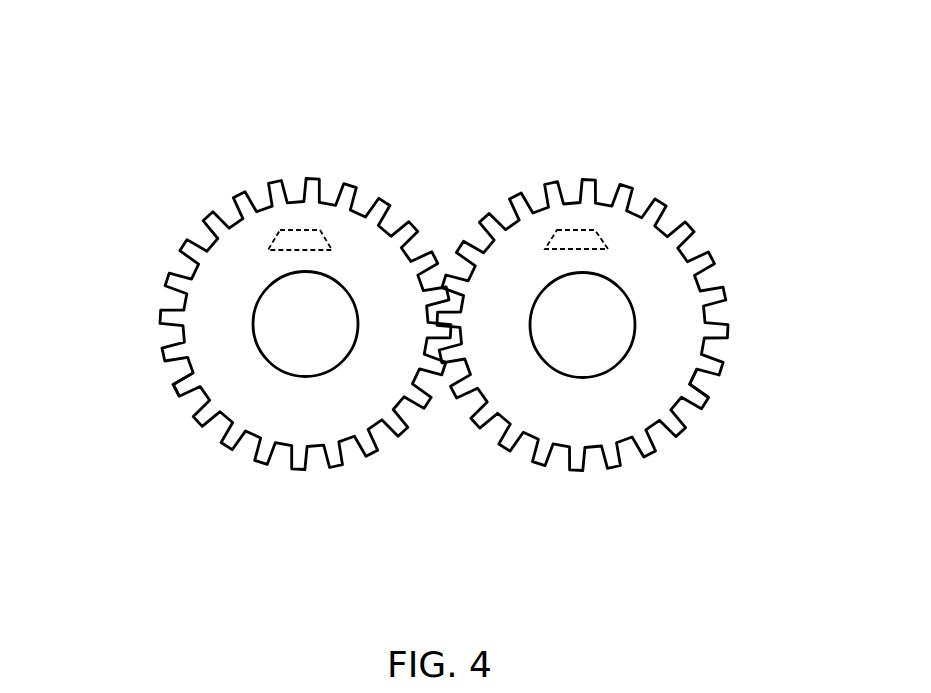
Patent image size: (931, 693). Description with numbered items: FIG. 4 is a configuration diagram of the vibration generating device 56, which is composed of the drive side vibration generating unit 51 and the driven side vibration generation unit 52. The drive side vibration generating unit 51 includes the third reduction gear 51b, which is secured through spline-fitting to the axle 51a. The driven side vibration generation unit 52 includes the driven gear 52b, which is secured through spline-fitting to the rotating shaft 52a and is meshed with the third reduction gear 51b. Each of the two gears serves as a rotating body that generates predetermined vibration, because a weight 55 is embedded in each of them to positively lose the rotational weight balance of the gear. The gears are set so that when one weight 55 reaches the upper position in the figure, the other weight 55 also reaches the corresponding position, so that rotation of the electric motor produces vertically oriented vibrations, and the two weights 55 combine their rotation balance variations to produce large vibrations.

The drive side vibration generating unit 51 is at (145, 279).
The axle 51a is at (291, 343).
The third reduction gear 51b is at (168, 391).
The driven side vibration generation unit 52 is at (730, 253).
The rotating shaft 52a is at (577, 343).
The driven gear 52b is at (710, 405).
The weight 55 is at (297, 230).
The vibration generating device 56 is at (451, 98).